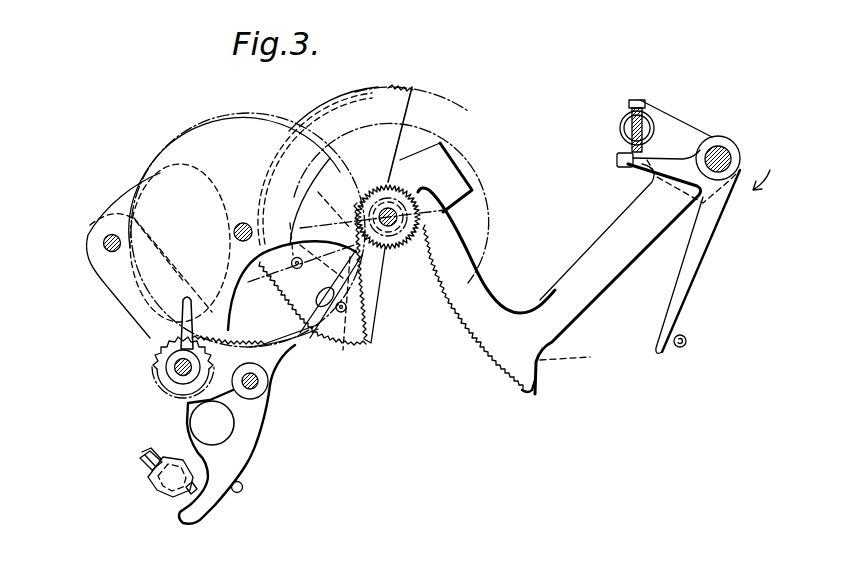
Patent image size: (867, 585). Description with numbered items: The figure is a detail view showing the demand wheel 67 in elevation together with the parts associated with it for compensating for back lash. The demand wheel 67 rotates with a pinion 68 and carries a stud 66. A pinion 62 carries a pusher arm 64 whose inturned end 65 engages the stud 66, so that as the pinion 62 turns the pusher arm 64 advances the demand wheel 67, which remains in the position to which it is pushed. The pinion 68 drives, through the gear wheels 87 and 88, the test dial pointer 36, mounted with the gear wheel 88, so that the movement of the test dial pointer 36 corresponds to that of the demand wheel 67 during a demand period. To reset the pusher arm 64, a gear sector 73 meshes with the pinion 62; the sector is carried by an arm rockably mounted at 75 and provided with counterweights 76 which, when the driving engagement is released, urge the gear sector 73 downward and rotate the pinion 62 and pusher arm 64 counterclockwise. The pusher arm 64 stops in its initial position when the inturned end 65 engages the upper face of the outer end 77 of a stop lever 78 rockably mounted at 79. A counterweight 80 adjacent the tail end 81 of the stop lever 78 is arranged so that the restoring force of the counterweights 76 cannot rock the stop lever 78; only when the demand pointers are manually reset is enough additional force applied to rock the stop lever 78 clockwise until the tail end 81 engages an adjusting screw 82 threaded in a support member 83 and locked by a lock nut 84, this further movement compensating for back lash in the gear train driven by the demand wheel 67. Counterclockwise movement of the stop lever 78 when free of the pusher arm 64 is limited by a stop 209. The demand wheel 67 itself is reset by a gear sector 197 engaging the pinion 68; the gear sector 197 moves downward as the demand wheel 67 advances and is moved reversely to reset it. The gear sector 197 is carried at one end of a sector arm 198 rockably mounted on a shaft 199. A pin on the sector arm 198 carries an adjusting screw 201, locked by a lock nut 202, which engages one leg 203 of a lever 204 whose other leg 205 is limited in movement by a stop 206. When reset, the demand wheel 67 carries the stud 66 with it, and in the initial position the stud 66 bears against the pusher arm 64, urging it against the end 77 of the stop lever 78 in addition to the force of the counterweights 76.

The gear wheel 87 is at (205, 119).
The counterweights 76 is at (132, 202).
The rockable mounting 75 is at (104, 243).
The pusher arm 64 is at (293, 213).
The stud 66 is at (297, 257).
The demand wheel 67 is at (400, 108).
The pinion 68 is at (398, 190).
The pinion 62 is at (396, 252).
The gear sector 73 is at (470, 275).
The inturned end 65 is at (290, 297).
The outer end 77 is at (344, 340).
The stop lever 78 is at (301, 348).
The test dial pointer 36 is at (182, 304).
The gear wheel 88 is at (166, 374).
The counterweight 80 is at (191, 419).
The rockable mounting 79 is at (262, 393).
The lock nut 84 is at (146, 466).
The support member 83 is at (158, 490).
The adjusting screw 82 is at (188, 493).
The tail end 81 is at (200, 525).
The stop 209 is at (243, 488).
The adjusting screw 201 is at (634, 100).
The lock nut 202 is at (620, 112).
The leg 203 is at (616, 158).
The shaft 199 is at (721, 146).
The lever 204 is at (764, 167).
The leg 205 is at (694, 282).
The stop 206 is at (687, 343).
The sector arm 198 is at (581, 315).
The gear sector 197 is at (536, 396).